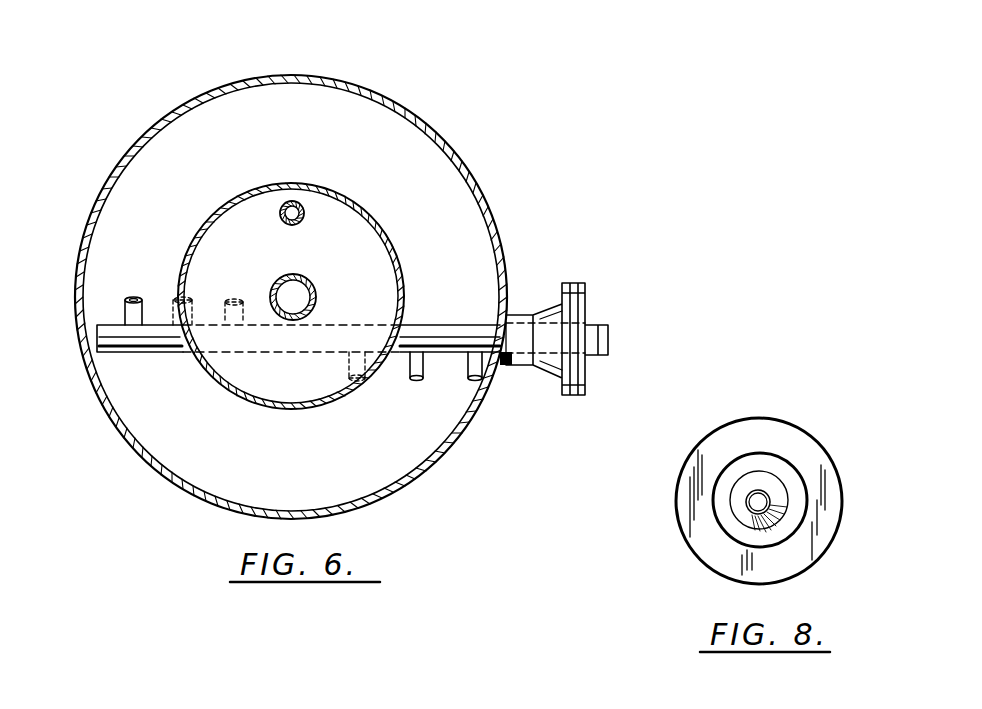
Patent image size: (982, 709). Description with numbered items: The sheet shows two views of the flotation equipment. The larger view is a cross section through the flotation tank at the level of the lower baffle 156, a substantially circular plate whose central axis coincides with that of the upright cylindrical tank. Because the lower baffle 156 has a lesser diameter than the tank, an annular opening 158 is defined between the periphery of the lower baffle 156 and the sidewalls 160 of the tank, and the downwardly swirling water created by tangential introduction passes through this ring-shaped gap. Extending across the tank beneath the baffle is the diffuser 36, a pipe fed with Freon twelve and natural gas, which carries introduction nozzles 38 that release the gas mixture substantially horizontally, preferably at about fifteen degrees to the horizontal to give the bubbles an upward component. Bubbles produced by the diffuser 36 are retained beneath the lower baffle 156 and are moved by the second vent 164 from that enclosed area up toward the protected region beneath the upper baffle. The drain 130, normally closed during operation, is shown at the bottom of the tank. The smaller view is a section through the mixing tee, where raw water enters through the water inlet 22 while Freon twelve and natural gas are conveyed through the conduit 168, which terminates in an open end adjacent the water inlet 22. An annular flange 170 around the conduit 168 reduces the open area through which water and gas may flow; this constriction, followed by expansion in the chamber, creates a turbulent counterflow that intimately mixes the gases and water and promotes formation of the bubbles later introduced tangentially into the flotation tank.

In FIG. 8, the water inlet 22 is at (797, 452).
In FIG. 6, the diffuser 36 is at (453, 332).
In FIG. 6, the introduction nozzles 38 is at (133, 300).
In FIG. 6, the drain 130 is at (586, 299).
In FIG. 6, the lower baffle 156 is at (358, 244).
In FIG. 6, the annular opening 158 is at (464, 222).
In FIG. 6, the sidewalls 160 is at (498, 230).
In FIG. 6, the second vent 164 is at (303, 204).
In FIG. 8, the conduit 168 is at (766, 530).
In FIG. 8, the annular flange 170 is at (749, 484).